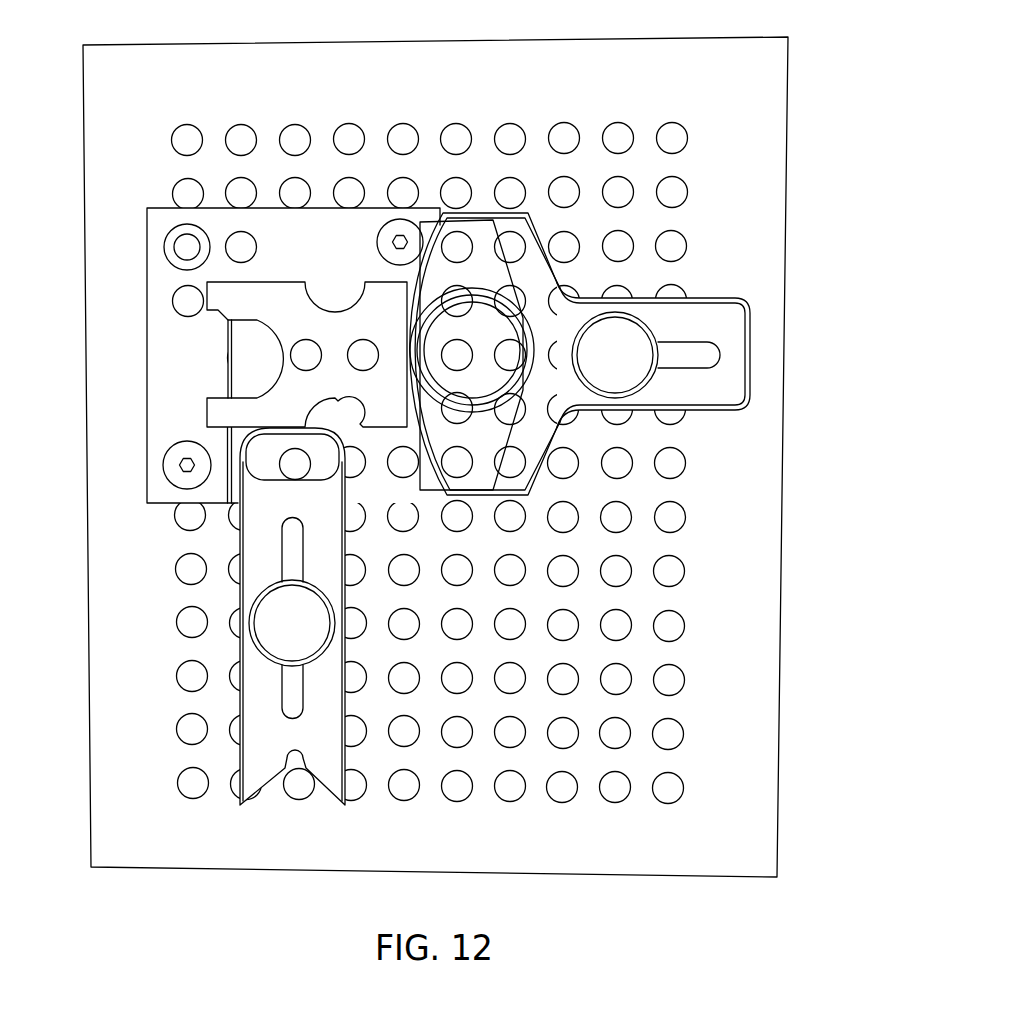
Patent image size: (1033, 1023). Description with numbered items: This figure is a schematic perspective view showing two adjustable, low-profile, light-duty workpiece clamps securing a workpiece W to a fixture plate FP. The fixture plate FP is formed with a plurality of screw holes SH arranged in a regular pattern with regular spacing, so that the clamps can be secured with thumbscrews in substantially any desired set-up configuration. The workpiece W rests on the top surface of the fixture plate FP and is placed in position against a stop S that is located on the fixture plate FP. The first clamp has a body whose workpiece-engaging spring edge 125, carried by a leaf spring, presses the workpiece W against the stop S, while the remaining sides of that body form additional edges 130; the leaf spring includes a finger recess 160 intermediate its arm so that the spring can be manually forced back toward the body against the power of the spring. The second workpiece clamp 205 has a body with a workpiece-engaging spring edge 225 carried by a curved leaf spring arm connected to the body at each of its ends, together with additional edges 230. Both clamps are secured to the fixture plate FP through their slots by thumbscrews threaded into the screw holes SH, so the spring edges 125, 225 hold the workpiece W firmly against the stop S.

The fixture plate FP is at (636, 97).
The screw holes SH is at (665, 809).
The stop S is at (164, 383).
The workpiece W is at (285, 292).
The workpiece-engaging spring edge 125 is at (619, 329).
The additional edges 130 is at (637, 284).
The finger recess 160 is at (475, 382).
The workpiece clamp 205 is at (289, 640).
The workpiece-engaging spring edge 225 is at (274, 437).
The additional edges 230 is at (226, 650).